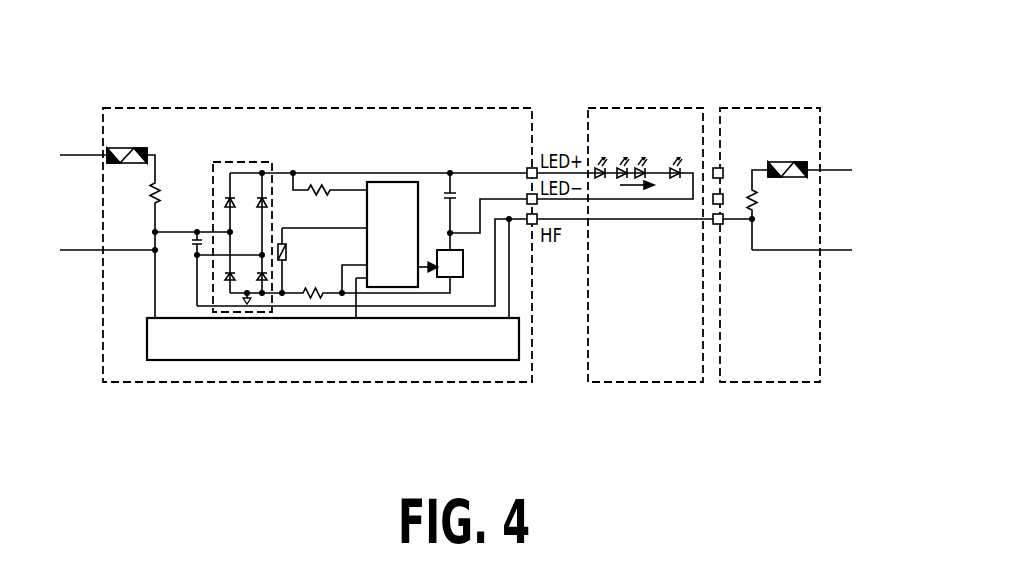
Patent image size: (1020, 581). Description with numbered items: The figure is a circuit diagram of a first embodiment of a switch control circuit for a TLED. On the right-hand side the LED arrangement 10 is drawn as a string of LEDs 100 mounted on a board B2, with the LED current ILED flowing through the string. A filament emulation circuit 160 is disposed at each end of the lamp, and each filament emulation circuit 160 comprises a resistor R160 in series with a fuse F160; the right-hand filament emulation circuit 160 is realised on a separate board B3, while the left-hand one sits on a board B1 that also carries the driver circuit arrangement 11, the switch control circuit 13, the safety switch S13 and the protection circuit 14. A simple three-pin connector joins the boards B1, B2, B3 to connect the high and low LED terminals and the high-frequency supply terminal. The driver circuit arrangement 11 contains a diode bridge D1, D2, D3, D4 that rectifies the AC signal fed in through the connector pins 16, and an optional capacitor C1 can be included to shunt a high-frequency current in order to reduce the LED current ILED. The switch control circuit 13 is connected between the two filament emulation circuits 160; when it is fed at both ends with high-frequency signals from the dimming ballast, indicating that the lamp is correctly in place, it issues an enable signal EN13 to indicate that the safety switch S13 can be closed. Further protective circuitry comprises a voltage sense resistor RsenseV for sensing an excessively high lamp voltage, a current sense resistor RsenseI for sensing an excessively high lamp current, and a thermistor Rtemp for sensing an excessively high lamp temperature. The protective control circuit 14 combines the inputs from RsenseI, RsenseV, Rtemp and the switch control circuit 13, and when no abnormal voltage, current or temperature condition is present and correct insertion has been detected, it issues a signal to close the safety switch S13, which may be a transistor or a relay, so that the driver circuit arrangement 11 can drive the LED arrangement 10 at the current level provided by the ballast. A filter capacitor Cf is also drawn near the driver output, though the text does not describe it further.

The filament emulation circuit 160 is at (487, 166).
The fuse F160 is at (145, 147).
The resistor R160 is at (162, 186).
The connector pins 16 is at (88, 157).
The driver circuit arrangement 11 is at (262, 160).
The switch control circuit 13 is at (195, 362).
The protective control circuit 14 is at (390, 182).
The board B1 is at (266, 382).
The board B2 is at (659, 382).
The board B3 is at (773, 382).
The diode D1 is at (225, 202).
The diode D2 is at (225, 277).
The diode D3 is at (286, 210).
The diode D4 is at (270, 286).
The capacitor C1 is at (181, 268).
The filter capacitor Cf is at (457, 194).
The voltage sense resistor RsenseV is at (318, 186).
The current sense resistor RsenseI is at (317, 298).
The thermistor Rtemp is at (287, 252).
The enable signal EN13 is at (354, 297).
The safety switch S13 is at (465, 265).
The LED arrangement 10 is at (624, 111).
The LEDs 100 is at (623, 158).
The LED current ILED is at (626, 190).